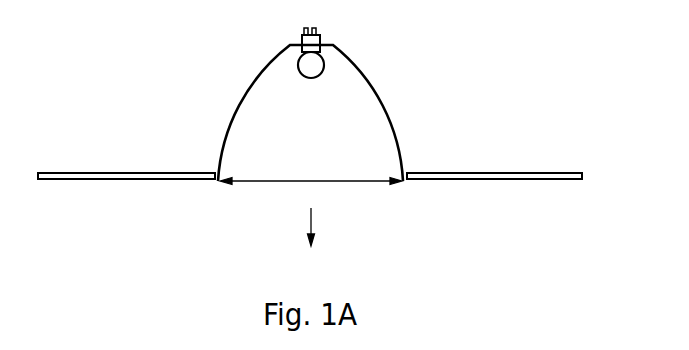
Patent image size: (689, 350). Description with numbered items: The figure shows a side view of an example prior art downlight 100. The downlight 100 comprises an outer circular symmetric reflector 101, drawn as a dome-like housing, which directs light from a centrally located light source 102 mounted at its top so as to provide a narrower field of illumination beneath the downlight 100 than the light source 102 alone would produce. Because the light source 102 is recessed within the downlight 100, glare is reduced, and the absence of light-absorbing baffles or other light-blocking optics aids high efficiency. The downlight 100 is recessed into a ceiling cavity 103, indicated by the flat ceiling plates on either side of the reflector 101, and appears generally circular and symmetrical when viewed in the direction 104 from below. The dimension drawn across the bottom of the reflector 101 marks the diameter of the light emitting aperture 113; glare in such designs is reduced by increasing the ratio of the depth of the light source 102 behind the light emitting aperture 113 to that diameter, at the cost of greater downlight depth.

The downlight 100 is at (398, 62).
The outer circular symmetric reflector 101 is at (238, 105).
The light source 102 is at (308, 63).
The ceiling cavity 103 is at (130, 163).
The viewing direction 104 is at (310, 242).
The light emitting aperture 113 is at (311, 171).